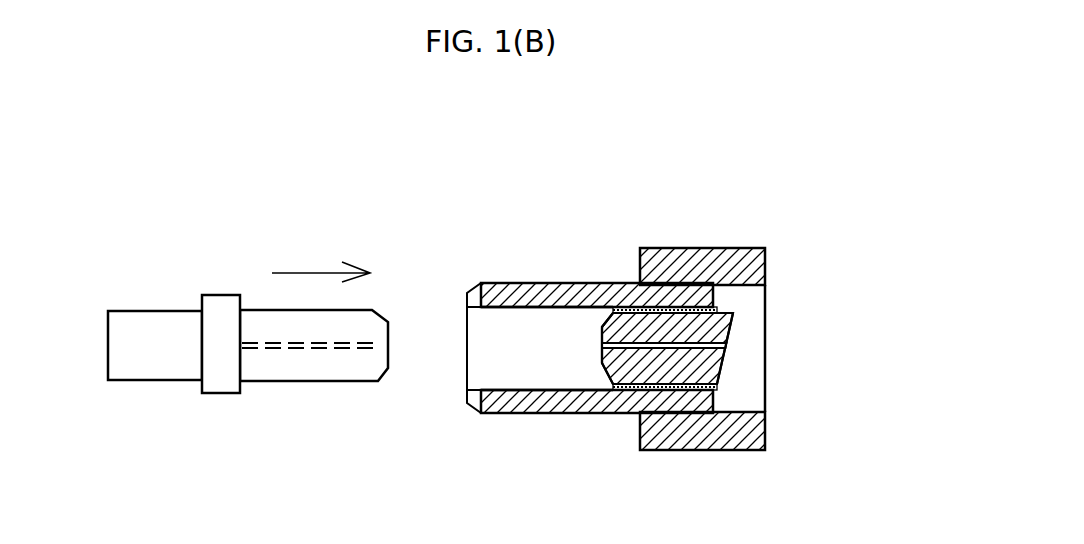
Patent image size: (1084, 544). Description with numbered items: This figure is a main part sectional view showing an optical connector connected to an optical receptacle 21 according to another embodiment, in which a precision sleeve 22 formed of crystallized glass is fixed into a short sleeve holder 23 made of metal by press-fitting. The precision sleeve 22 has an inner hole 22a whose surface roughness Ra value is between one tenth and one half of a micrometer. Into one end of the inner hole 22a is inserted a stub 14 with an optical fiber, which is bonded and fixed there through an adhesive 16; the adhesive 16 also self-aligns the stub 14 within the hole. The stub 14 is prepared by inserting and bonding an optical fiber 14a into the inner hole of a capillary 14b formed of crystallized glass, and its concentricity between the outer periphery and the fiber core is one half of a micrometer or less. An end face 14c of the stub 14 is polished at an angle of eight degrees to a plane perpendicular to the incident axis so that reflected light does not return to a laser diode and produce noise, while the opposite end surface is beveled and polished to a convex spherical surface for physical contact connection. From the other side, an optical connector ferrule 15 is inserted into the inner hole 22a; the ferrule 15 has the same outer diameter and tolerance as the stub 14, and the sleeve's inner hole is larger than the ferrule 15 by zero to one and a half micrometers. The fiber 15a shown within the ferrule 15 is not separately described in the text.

The optical connector ferrule 15 is at (248, 333).
The optical fiber of plug 15a is at (292, 348).
The optical receptacle 21 is at (627, 182).
The precision sleeve 22 is at (555, 285).
The inner hole 22a is at (530, 308).
The sleeve holder 23 is at (728, 247).
The adhesive 16 is at (718, 310).
The stub with an optical fiber 14 is at (704, 397).
The optical fiber 14a is at (727, 347).
The capillary 14b is at (603, 368).
The end face 14c is at (725, 357).